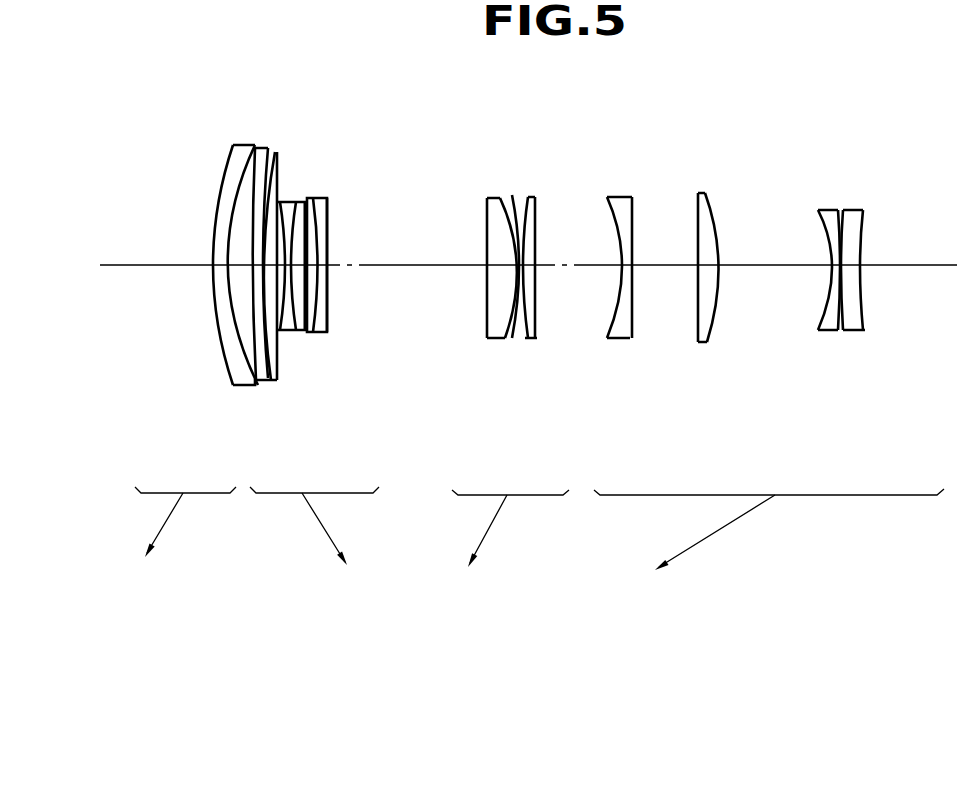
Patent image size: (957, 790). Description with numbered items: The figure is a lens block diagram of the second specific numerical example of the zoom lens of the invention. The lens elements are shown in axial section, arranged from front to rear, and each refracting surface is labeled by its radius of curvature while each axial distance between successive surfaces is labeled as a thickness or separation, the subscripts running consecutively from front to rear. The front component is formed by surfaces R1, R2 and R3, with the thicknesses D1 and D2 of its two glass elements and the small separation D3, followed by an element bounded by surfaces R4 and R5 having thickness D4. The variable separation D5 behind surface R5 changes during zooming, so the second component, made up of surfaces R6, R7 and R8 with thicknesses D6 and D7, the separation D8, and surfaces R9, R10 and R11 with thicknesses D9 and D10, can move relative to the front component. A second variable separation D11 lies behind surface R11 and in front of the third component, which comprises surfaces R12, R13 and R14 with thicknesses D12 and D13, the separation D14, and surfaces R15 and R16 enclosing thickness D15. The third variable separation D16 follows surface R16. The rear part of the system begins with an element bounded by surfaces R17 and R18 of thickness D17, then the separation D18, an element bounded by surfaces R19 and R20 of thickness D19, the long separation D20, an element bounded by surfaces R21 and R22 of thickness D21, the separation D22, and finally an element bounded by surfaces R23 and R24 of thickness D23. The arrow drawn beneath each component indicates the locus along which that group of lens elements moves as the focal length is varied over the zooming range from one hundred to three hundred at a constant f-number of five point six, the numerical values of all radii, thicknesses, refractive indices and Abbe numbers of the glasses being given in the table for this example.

The radius of curvature of first surface R1 is at (221, 187).
The radius of curvature of second surface R2 is at (243, 178).
The radius of curvature of third surface R3 is at (254, 147).
The radius of curvature of fourth surface R4 is at (264, 158).
The radius of curvature of fifth surface R5 is at (272, 160).
The radius of curvature of sixth surface R6 is at (277, 157).
The radius of curvature of seventh surface R7 is at (282, 201).
The radius of curvature of eighth surface R8 is at (294, 201).
The radius of curvature of ninth surface R9 is at (306, 201).
The radius of curvature of tenth surface R10 is at (316, 198).
The radius of curvature of eleventh surface R11 is at (328, 220).
The radius of curvature of twelfth surface R12 is at (486, 222).
The radius of curvature of thirteenth surface R13 is at (500, 196).
The radius of curvature of fourteenth surface R14 is at (513, 194).
The radius of curvature of fifteenth surface R15 is at (527, 196).
The radius of curvature of sixteenth surface R16 is at (536, 208).
The radius of curvature of seventeenth surface R17 is at (611, 215).
The radius of curvature of eighteenth surface R18 is at (631, 212).
The radius of curvature of nineteenth surface R19 is at (697, 213).
The radius of curvature of twentieth surface R20 is at (717, 214).
The radius of curvature of twenty-first surface R21 is at (821, 226).
The radius of curvature of twenty-second surface R22 is at (840, 218).
The radius of curvature of twenty-third surface R23 is at (843, 218).
The radius of curvature of twenty-fourth surface R24 is at (864, 224).
The axial thickness D1 is at (220, 290).
The axial thickness D2 is at (230, 293).
The axial separation D3 is at (240, 290).
The axial thickness D4 is at (258, 300).
The variable axial separation D5 is at (263, 383).
The axial thickness D6 is at (282, 335).
The axial thickness D7 is at (290, 337).
The axial separation D8 is at (303, 337).
The axial thickness D9 is at (317, 333).
The axial thickness D10 is at (328, 297).
The variable axial separation D11 is at (408, 268).
The axial thickness D12 is at (488, 297).
The axial thickness D13 is at (502, 338).
The axial separation D14 is at (523, 340).
The axial thickness D15 is at (537, 340).
The variable axial separation D16 is at (568, 268).
The axial thickness D17 is at (612, 340).
The axial separation D18 is at (667, 270).
The axial thickness D19 is at (700, 343).
The axial separation D20 is at (762, 270).
The axial thickness D21 is at (826, 283).
The axial separation D22 is at (848, 290).
The axial thickness D23 is at (860, 285).